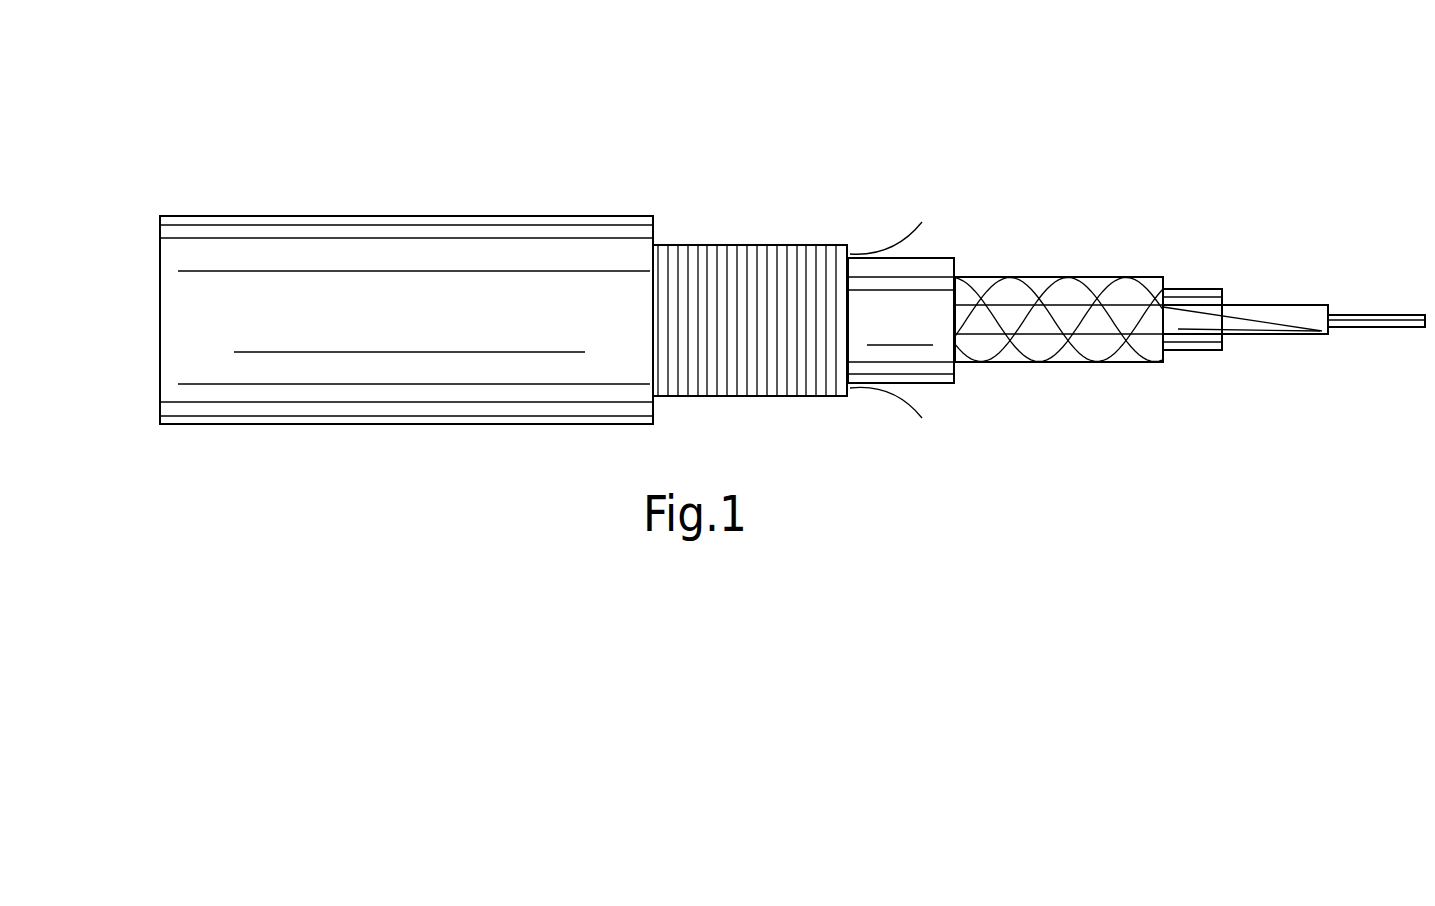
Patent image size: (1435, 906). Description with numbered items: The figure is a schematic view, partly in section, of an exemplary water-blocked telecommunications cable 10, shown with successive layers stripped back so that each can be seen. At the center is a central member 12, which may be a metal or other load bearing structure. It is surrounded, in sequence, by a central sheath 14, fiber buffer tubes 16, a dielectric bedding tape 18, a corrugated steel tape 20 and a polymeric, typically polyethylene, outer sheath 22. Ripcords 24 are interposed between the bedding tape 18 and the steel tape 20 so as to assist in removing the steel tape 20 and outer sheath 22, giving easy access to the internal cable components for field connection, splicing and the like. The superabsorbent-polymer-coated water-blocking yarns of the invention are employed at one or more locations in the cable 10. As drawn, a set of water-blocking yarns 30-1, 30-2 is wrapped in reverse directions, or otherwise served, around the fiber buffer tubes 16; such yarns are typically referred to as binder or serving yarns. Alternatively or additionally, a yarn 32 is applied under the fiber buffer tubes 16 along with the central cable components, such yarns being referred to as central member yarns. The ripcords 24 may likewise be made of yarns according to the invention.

The telecommunications cable 10 is at (817, 90).
The central member 12 is at (1347, 318).
The central sheath 14 is at (1240, 327).
The fiber buffer tubes 16 is at (1127, 323).
The dielectric bedding tape 18 is at (887, 334).
The corrugated steel tape 20 is at (751, 352).
The outer sheath 22 is at (403, 327).
The ripcords 24 is at (890, 250).
The water-blocking yarn 30-1 is at (990, 280).
The water-blocking yarn 30-2 is at (1062, 342).
The yarn 32 is at (1248, 320).